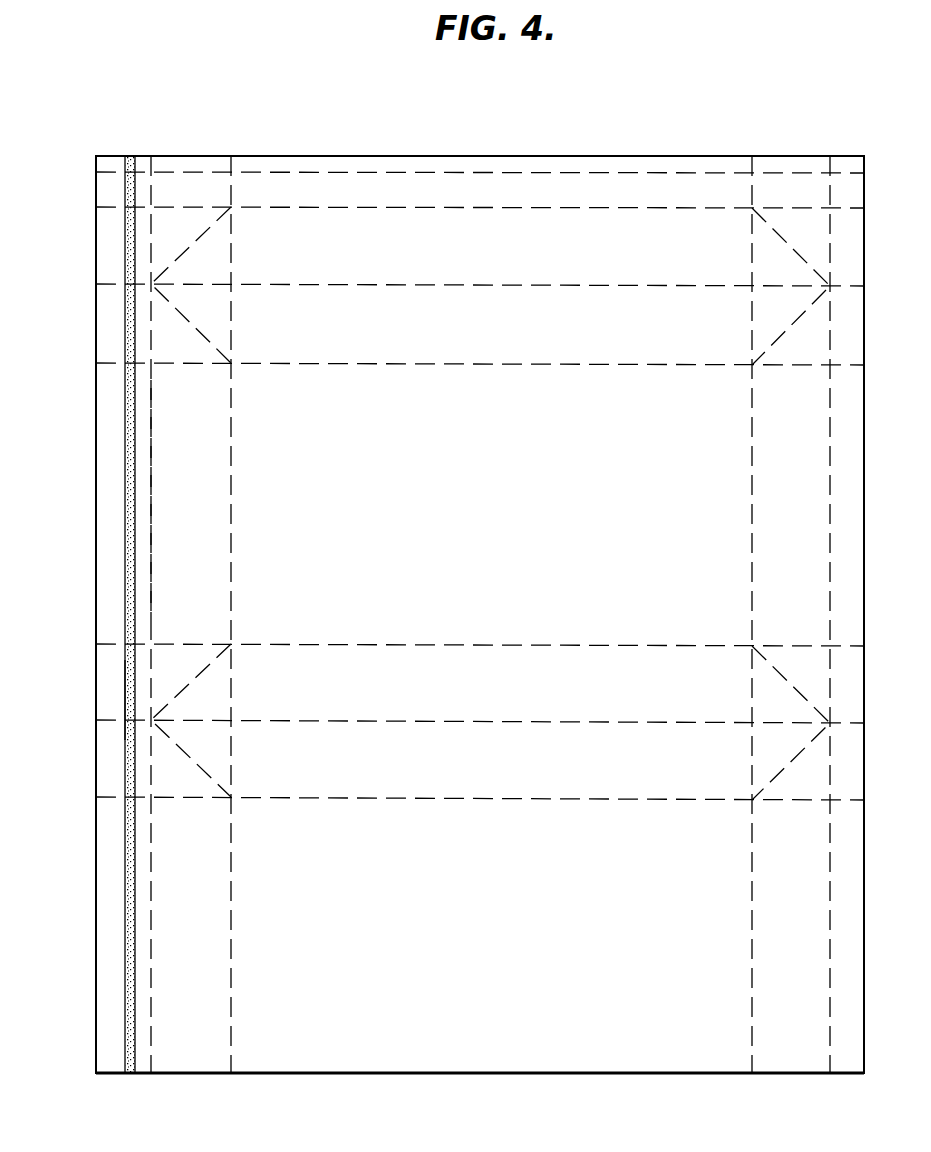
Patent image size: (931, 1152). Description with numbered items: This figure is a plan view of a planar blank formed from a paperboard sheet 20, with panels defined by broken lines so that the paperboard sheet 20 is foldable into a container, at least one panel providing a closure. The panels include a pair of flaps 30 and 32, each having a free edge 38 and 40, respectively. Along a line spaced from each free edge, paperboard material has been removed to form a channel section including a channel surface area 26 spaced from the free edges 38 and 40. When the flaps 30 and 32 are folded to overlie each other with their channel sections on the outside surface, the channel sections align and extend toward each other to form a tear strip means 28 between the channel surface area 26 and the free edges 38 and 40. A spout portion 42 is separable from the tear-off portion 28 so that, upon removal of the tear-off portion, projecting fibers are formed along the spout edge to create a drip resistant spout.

The paperboard sheet 20 is at (356, 1084).
The channel surface area 26 is at (126, 400).
The tear strip means 28 is at (108, 697).
The flap 30 is at (143, 1024).
The flap 32 is at (143, 503).
The free edge 38 is at (96, 922).
The free edge 40 is at (96, 440).
The spout portion 42 is at (143, 657).